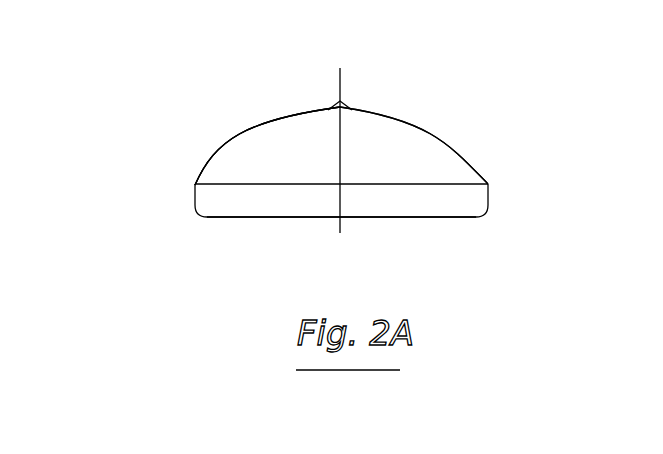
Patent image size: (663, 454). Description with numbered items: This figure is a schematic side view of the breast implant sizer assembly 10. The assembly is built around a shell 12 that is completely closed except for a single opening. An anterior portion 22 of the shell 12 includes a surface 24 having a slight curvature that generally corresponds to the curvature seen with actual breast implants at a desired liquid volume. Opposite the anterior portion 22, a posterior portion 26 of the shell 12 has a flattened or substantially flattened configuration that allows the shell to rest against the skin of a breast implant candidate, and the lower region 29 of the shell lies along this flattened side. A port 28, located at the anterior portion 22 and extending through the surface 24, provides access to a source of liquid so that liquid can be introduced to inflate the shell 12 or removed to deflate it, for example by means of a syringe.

The cushion assembly 10 is at (128, 65).
The shell 12 is at (491, 176).
The anterior portion 22 is at (453, 99).
The surface 24 is at (257, 128).
The posterior portion 26 is at (322, 103).
The port 28 is at (340, 68).
The bottom surface 29 is at (425, 216).